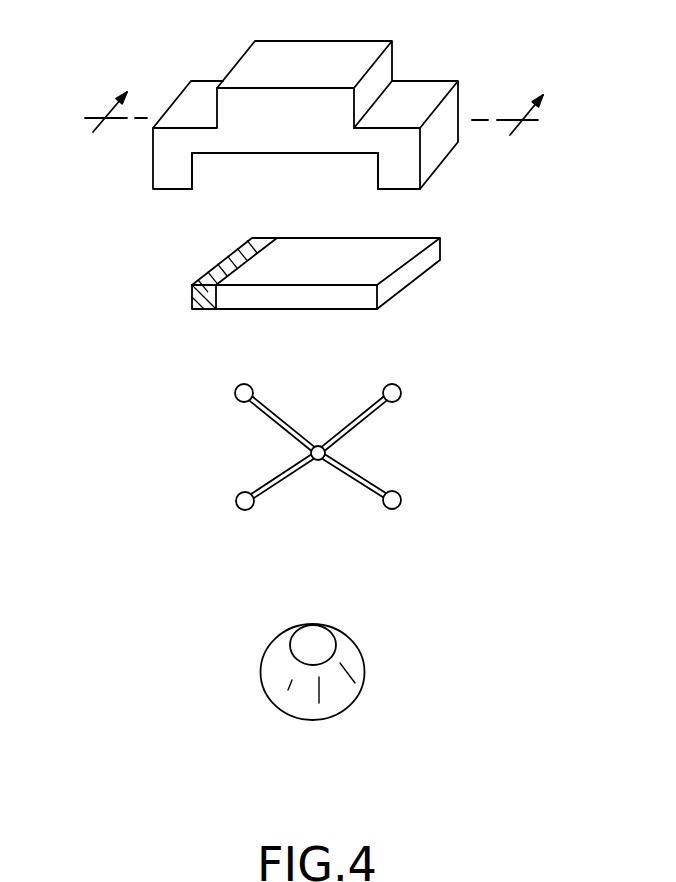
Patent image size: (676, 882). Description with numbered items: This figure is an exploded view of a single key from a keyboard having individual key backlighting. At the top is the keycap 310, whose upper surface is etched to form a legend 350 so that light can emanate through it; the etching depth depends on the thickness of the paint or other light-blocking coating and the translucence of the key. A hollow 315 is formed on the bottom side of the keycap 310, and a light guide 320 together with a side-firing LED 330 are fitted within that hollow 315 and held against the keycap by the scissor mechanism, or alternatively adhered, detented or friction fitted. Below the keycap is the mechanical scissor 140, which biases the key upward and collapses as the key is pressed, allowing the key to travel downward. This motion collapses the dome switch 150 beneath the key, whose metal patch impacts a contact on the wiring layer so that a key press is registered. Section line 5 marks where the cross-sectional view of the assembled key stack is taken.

The section line 5- 5 is at (312, 115).
The keycap 310 is at (422, 80).
The hollow 315 is at (222, 150).
The legend 350 is at (314, 50).
The light guide 320 is at (414, 265).
The LED 330 is at (207, 284).
The mechanical scissor 140 is at (370, 417).
The dome switch 150 is at (365, 657).